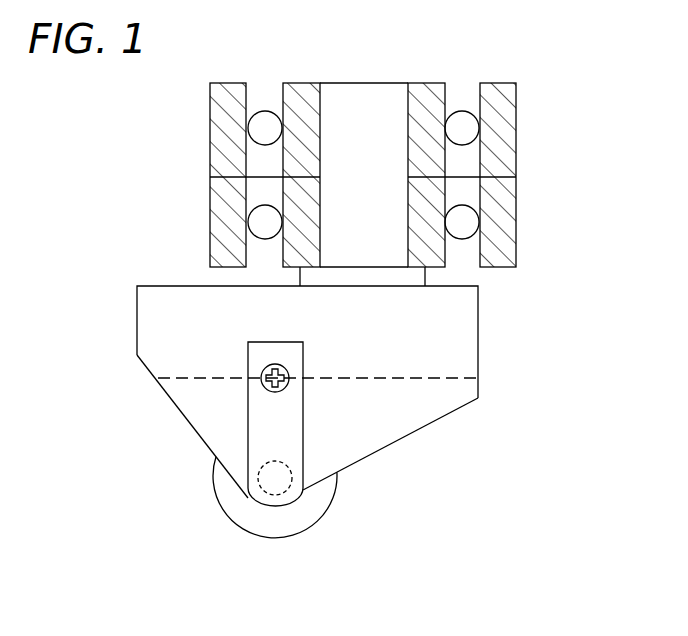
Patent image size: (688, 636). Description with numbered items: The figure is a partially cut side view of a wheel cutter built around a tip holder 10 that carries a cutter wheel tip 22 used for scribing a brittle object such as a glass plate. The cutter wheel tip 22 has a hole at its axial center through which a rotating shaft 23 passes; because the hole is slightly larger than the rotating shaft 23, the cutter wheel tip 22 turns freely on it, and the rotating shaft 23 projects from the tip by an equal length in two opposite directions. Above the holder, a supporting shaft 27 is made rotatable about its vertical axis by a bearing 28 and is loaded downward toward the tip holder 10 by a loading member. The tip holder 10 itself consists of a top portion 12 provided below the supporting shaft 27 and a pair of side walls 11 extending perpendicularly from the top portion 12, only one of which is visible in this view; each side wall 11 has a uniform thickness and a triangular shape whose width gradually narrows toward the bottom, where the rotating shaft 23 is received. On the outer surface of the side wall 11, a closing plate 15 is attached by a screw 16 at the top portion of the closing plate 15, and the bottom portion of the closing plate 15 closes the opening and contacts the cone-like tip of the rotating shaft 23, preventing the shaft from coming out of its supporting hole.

The tip holder 10 is at (560, 290).
The side wall 11 is at (397, 433).
The top portion 12 is at (480, 343).
The closing plate 15 is at (263, 435).
The screw 16 is at (263, 363).
The cutter wheel tip 22 is at (298, 525).
The rotating shaft 23 is at (272, 495).
The supporting shaft 27 is at (367, 105).
The bearing 28 is at (258, 160).